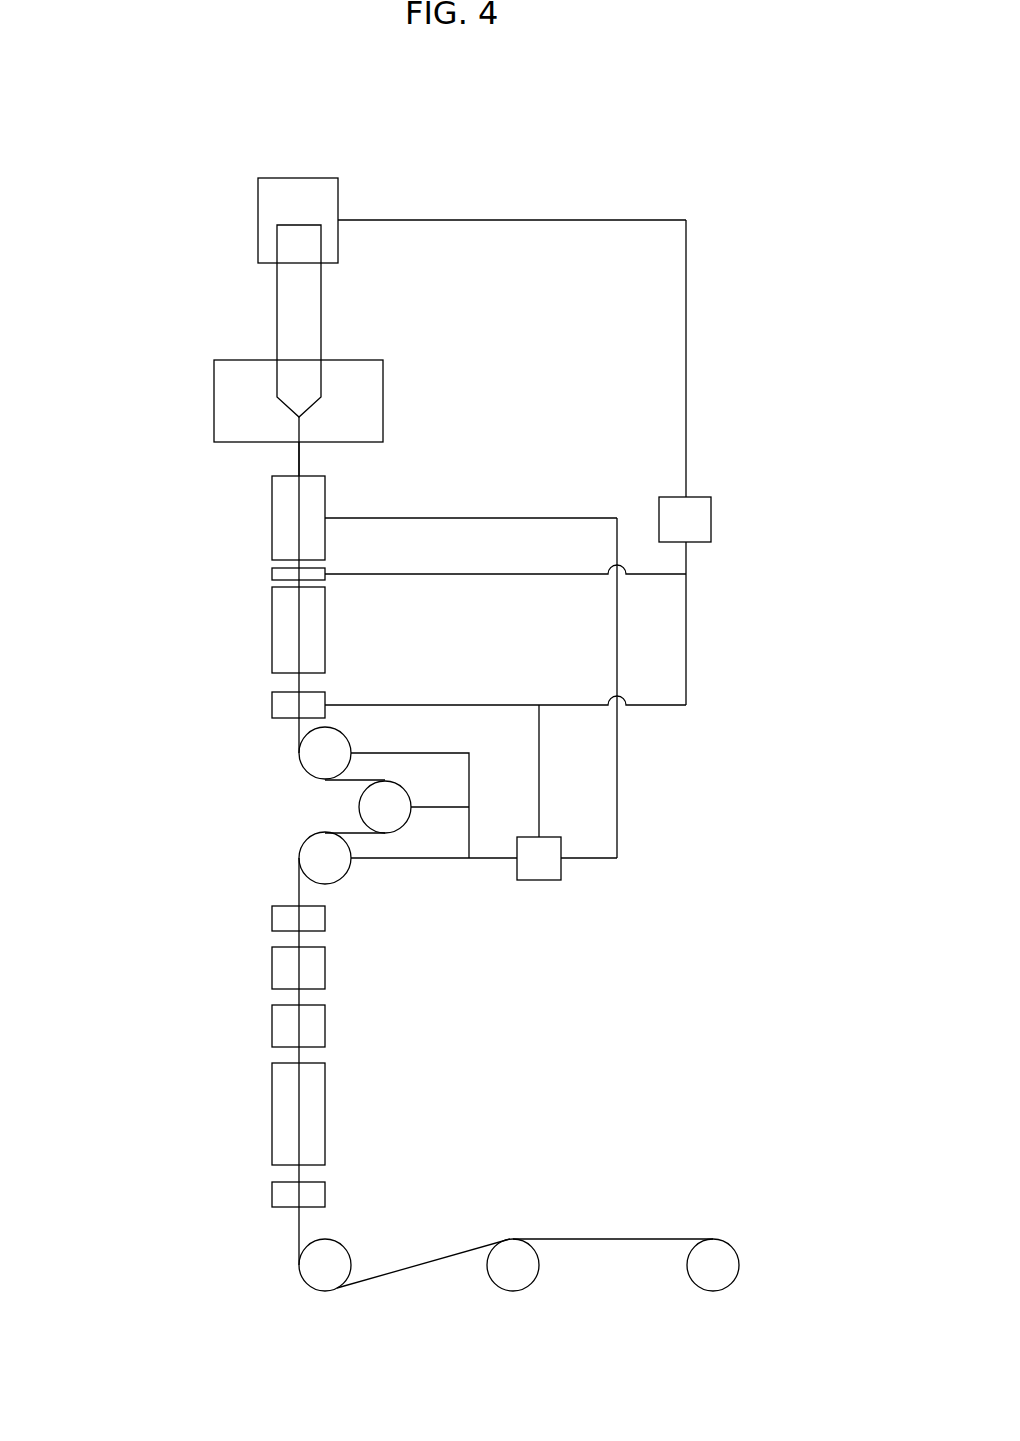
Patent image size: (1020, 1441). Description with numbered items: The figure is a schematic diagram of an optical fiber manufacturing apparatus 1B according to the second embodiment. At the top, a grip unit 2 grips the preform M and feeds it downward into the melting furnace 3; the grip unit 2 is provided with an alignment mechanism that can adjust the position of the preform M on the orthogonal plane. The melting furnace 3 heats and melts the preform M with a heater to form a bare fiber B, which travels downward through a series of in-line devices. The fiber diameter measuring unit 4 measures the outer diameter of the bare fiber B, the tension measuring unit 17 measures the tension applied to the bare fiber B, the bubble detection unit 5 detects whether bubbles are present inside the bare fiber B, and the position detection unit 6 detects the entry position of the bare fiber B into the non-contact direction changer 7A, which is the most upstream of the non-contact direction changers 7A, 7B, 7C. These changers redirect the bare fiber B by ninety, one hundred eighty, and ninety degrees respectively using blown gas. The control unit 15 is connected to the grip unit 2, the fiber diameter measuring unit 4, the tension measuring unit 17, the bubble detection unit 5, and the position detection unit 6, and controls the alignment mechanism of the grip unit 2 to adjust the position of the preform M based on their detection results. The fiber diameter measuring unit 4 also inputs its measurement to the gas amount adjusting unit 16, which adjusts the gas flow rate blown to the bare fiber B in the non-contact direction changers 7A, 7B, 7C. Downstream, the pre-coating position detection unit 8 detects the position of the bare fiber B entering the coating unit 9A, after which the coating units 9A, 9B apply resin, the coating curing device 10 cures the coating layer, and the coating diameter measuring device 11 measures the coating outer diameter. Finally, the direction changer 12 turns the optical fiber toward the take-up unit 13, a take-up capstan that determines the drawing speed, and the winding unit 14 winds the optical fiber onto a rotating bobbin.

The manufacturing apparatus 1B is at (158, 176).
The grip unit 2 is at (257, 204).
The preform M is at (276, 314).
The melting furnace 3 is at (213, 398).
The bare fiber B is at (297, 458).
The fiber diameter measuring unit 4 is at (278, 515).
The tension measuring unit 17 is at (278, 574).
The bubble detection unit 5 is at (278, 634).
The position detection unit 6 is at (278, 706).
The control unit 15 is at (698, 522).
The gas amount adjusting unit 16 is at (543, 870).
The non-contact direction changer 7A is at (321, 763).
The non-contact direction changer 7B is at (380, 816).
The non-contact direction changer 7C is at (320, 855).
The pre-coating position detection unit 8 is at (278, 918).
The coating unit 9A is at (278, 970).
The coating unit 9B is at (278, 1027).
The coating curing device 10 is at (278, 1110).
The coating diameter measuring device 11 is at (278, 1195).
The direction changer 12 is at (325, 1272).
The take-up unit 13 is at (513, 1272).
The winding unit 14 is at (713, 1272).